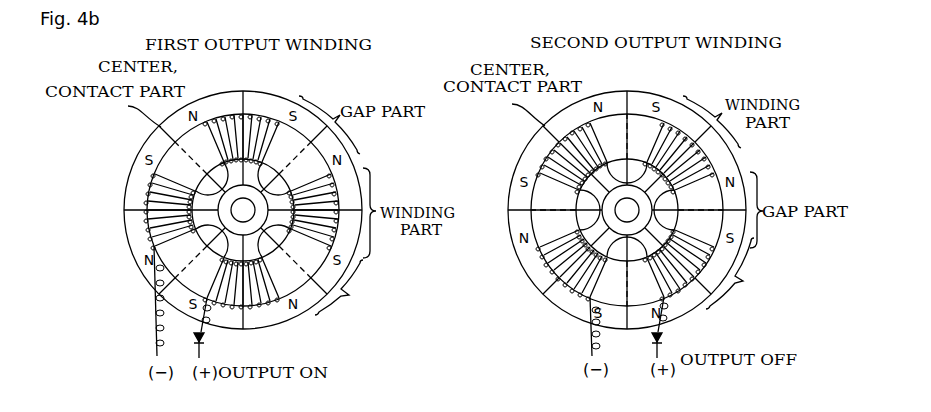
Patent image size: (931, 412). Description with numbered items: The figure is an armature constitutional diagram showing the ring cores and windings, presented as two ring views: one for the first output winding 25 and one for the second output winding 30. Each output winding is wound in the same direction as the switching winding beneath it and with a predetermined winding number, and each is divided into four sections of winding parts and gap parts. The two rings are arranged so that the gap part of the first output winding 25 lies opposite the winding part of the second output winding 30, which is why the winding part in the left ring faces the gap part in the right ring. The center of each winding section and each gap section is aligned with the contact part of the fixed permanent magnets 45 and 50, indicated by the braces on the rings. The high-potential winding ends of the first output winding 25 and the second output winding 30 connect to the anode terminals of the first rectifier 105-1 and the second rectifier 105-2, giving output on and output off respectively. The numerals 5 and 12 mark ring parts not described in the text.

The stator yoke 5 is at (151, 147).
The first output winding 25 is at (146, 233).
The fixed permanent magnet 45 is at (341, 287).
The first rectifier 105-1 is at (205, 339).
The rotor 12 is at (536, 203).
The second output winding 30 is at (548, 267).
The fixed permanent magnet 50 is at (737, 273).
The second rectifier 105-2 is at (663, 338).